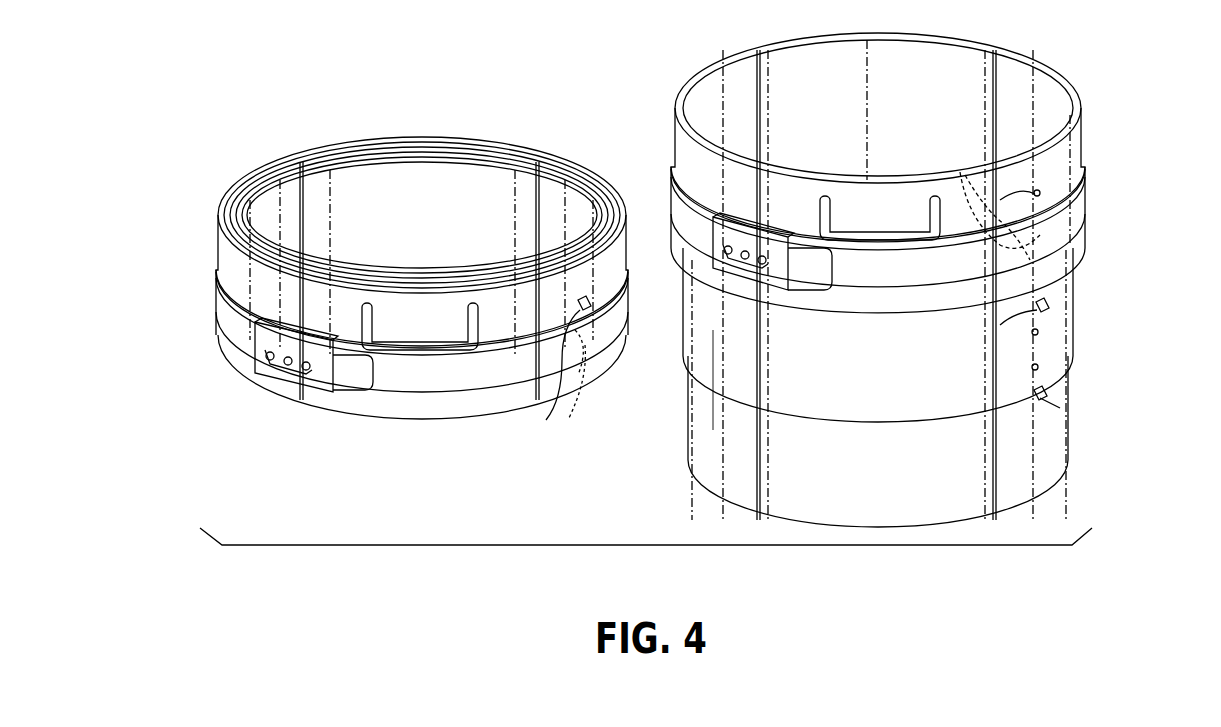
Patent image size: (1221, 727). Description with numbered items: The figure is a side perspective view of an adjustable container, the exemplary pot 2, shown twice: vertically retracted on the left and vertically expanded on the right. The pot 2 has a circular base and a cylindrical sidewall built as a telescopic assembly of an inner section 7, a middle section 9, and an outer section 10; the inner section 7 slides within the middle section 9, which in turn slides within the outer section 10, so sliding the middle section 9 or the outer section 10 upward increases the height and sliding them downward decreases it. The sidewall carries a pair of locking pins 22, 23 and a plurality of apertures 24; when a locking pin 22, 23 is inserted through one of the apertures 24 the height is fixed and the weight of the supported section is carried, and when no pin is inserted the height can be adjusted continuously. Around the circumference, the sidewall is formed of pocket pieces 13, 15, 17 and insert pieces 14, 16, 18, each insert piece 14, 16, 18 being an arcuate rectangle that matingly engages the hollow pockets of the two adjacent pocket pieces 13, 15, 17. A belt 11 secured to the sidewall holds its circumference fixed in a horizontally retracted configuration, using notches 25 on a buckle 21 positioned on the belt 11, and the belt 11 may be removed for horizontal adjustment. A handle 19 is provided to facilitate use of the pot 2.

The pot 2 is at (212, 97).
The inner section 7 is at (1106, 426).
The middle section 9 is at (1106, 268).
The outer section 10 is at (236, 268).
The belt 11 is at (229, 326).
The pocket piece 13 is at (425, 246).
The insert piece 14 is at (283, 232).
The pocket piece 15 is at (835, 372).
The insert piece 16 is at (723, 357).
The pocket piece 17 is at (490, 326).
The insert piece 18 is at (262, 303).
The handle 19 is at (420, 350).
The buckle 21 is at (330, 345).
The locking pin 22 is at (1050, 394).
The locking pin 23 is at (590, 298).
The apertures 24 is at (1033, 333).
The notches 25 is at (280, 378).